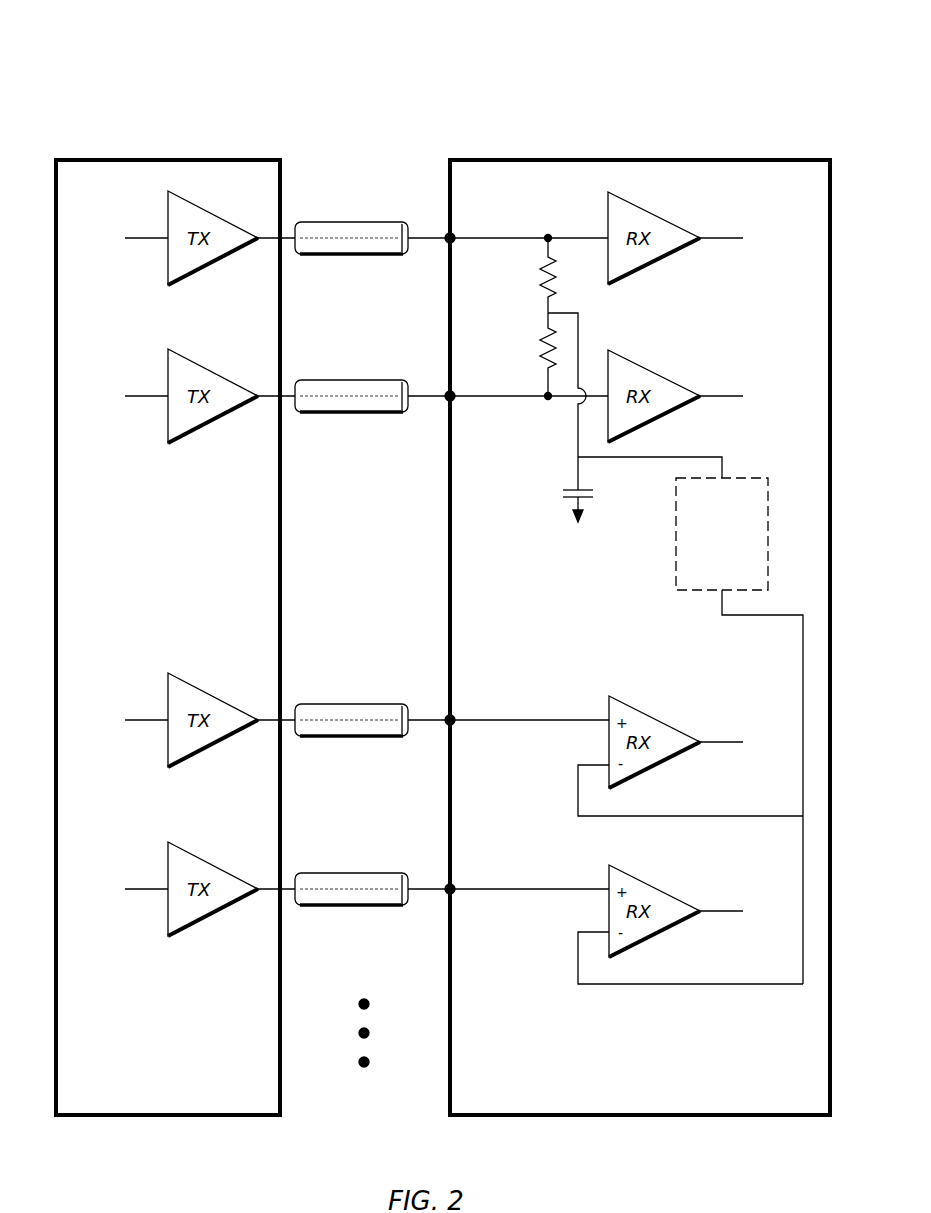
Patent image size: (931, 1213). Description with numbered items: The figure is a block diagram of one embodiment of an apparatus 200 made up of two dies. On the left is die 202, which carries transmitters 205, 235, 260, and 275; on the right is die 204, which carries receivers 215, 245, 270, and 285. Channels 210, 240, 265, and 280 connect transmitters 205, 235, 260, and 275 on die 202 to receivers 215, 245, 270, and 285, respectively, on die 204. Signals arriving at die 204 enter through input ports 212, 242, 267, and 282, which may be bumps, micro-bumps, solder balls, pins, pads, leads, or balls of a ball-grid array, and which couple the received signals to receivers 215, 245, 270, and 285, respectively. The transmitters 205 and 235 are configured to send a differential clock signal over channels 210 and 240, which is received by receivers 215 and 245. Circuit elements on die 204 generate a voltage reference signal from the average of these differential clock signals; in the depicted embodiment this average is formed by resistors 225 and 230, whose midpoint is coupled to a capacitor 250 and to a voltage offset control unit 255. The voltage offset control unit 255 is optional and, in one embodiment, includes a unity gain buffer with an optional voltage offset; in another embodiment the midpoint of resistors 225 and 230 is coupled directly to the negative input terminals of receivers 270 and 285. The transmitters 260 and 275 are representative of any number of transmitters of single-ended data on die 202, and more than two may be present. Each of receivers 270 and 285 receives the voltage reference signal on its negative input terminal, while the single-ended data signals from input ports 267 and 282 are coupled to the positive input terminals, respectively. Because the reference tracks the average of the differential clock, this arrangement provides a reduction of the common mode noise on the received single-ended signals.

The apparatus 200 is at (768, 66).
The die 202 is at (160, 160).
The die 204 is at (650, 160).
The transmitter 205 is at (208, 212).
The channel 210 is at (360, 223).
The input port 212 is at (453, 235).
The receiver 215 is at (650, 212).
The resistor 225 is at (538, 276).
The resistor 230 is at (538, 340).
The transmitter 235 is at (208, 370).
The channel 240 is at (360, 381).
The input port 242 is at (453, 393).
The receiver 245 is at (650, 370).
The capacitor 250 is at (588, 502).
The voltage offset control unit 255 is at (739, 731).
The transmitter 260 is at (208, 694).
The channel 265 is at (360, 705).
The input port 267 is at (453, 717).
The receiver 270 is at (650, 716).
The transmitter 275 is at (208, 863).
The channel 280 is at (360, 874).
The input port 282 is at (453, 886).
The receiver 285 is at (650, 884).